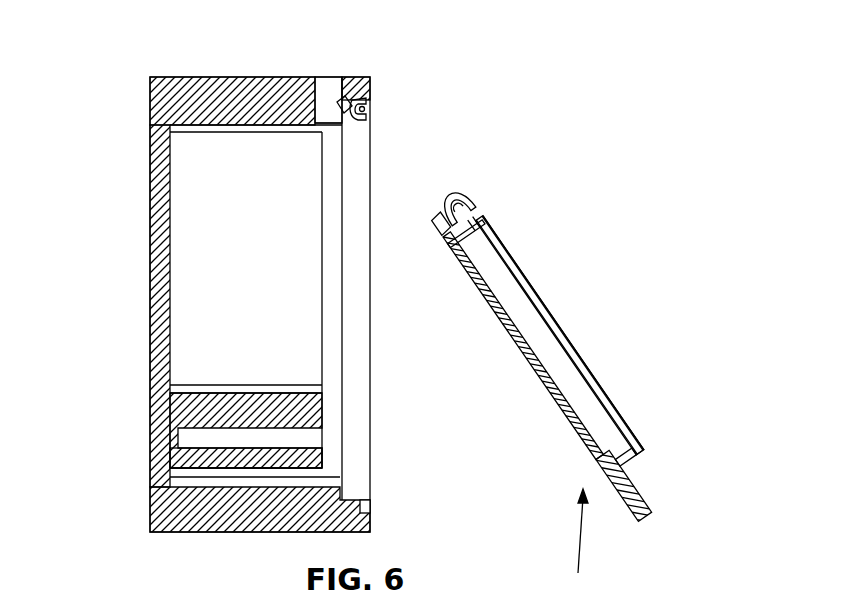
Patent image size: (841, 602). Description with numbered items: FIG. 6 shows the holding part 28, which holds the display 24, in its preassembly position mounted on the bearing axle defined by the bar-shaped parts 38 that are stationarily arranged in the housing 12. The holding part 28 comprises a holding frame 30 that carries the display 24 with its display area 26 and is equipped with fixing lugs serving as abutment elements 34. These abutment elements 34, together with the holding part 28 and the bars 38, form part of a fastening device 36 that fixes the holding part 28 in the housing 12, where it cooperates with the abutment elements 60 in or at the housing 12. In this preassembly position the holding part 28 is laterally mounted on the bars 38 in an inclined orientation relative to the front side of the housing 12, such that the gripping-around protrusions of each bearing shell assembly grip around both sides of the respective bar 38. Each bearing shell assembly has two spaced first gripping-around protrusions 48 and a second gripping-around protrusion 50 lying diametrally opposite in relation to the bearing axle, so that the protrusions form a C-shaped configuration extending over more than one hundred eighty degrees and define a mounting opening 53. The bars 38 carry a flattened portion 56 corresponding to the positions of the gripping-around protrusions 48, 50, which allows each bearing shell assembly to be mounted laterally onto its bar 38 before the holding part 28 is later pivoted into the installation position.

The housing 12 is at (265, 110).
The flattened portion 56 is at (308, 79).
The bar-shaped part 38 is at (368, 123).
The mounting opening 53 is at (450, 205).
The first gripping-around protrusion 48 is at (475, 208).
The display 24 is at (520, 268).
The holding frame 30 is at (547, 337).
The display area 26 is at (606, 375).
The abutment element 34 is at (648, 512).
The second gripping-around protrusion 50 is at (445, 241).
The abutment element 60 is at (289, 402).
The fastening device 36 is at (323, 457).
The holding part 28 is at (579, 545).